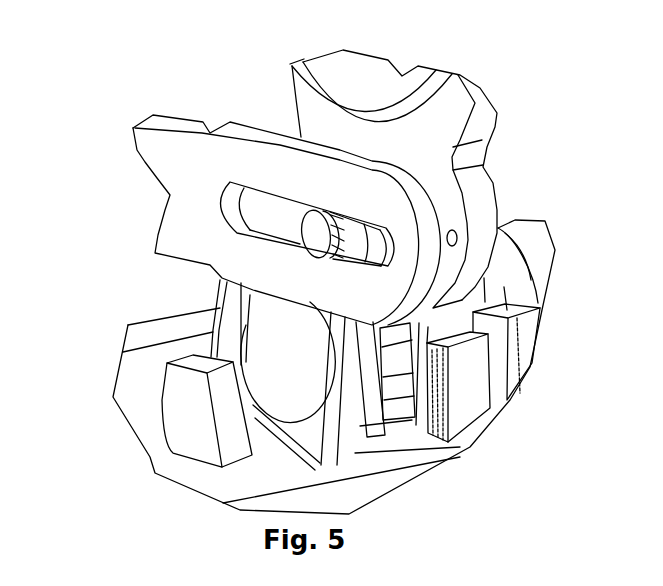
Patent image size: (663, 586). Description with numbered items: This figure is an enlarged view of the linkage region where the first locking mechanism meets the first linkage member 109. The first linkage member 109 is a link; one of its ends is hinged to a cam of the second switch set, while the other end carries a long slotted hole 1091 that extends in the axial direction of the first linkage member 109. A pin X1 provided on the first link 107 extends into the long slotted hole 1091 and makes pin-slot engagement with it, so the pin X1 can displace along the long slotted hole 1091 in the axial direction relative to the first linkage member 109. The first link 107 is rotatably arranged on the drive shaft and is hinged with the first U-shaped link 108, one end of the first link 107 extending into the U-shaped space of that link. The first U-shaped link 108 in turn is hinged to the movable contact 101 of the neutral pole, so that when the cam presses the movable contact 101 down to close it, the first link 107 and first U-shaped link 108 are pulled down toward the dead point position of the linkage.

The movable contact 101 is at (143, 403).
The first link 107 is at (462, 104).
The first U-shaped link 108 is at (230, 323).
The first linkage member 109 is at (156, 142).
The long slotted hole 1091 is at (263, 203).
The pin X1 is at (352, 238).